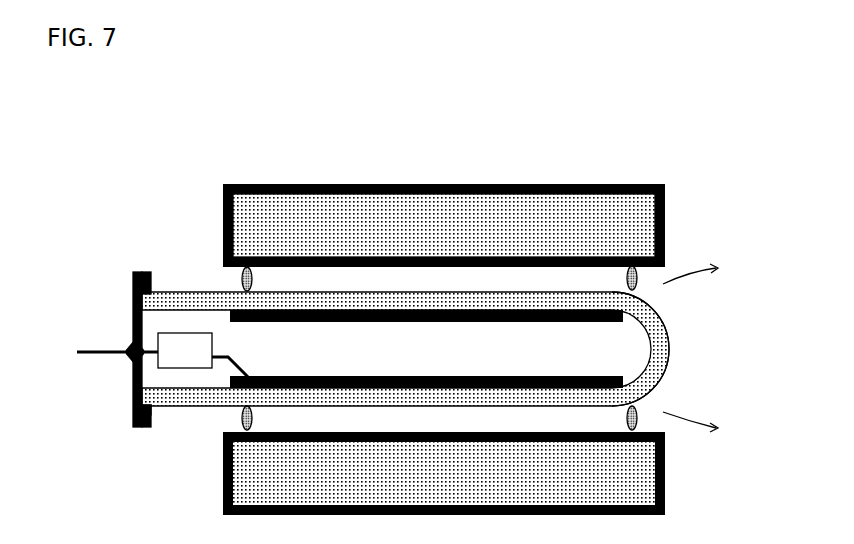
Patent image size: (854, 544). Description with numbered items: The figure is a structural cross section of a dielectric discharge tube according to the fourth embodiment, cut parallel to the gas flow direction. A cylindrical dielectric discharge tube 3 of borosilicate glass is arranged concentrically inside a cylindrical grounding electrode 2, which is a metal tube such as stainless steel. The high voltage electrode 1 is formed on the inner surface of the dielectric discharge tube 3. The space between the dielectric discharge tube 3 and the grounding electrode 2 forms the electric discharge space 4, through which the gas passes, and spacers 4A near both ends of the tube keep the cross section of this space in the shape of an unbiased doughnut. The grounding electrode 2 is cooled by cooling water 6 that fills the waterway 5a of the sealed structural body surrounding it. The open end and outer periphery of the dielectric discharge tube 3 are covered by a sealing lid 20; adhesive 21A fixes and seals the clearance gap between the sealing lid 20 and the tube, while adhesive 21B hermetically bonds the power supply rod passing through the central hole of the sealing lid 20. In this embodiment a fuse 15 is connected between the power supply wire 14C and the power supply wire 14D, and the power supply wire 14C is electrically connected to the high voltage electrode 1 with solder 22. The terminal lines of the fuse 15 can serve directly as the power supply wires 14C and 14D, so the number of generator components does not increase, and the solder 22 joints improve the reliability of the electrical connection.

The high voltage electrode 1 is at (545, 323).
The grounding electrode 2 is at (665, 225).
The dielectric discharge tube 3 is at (672, 348).
The electric discharge space 4 is at (388, 280).
The spacer 4A is at (255, 279).
The waterway 5a is at (603, 213).
The cooling water 6 is at (482, 220).
The power supply wire 14C is at (232, 353).
The power supply wire 14D is at (85, 347).
The fuse 15 is at (185, 333).
The sealing lid 20 is at (148, 267).
The adhesive 21A is at (152, 410).
The adhesive 21B is at (127, 361).
The solder 22 is at (265, 374).